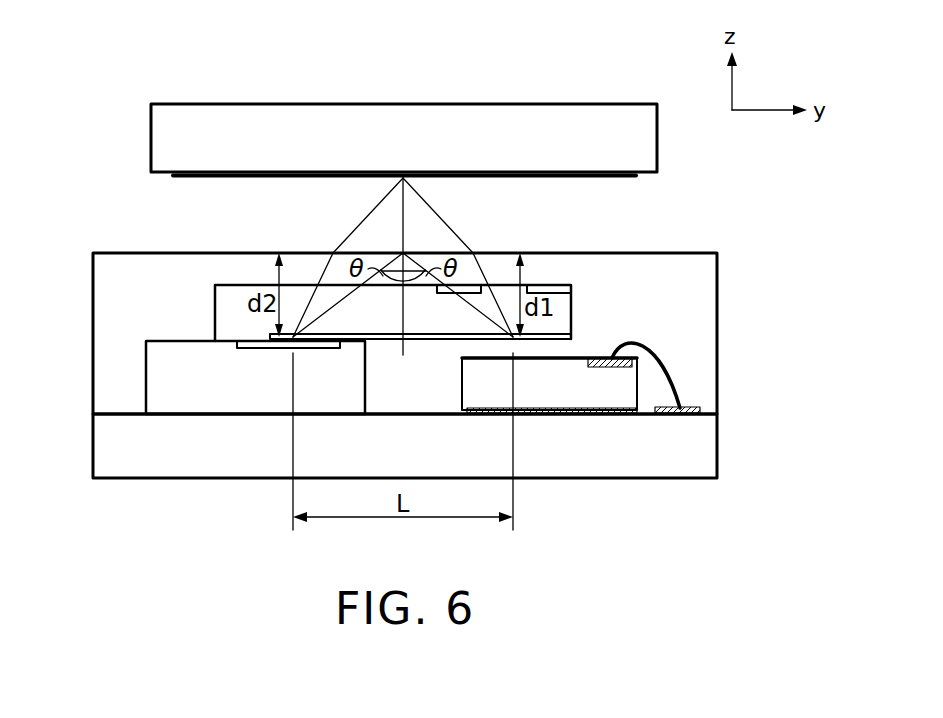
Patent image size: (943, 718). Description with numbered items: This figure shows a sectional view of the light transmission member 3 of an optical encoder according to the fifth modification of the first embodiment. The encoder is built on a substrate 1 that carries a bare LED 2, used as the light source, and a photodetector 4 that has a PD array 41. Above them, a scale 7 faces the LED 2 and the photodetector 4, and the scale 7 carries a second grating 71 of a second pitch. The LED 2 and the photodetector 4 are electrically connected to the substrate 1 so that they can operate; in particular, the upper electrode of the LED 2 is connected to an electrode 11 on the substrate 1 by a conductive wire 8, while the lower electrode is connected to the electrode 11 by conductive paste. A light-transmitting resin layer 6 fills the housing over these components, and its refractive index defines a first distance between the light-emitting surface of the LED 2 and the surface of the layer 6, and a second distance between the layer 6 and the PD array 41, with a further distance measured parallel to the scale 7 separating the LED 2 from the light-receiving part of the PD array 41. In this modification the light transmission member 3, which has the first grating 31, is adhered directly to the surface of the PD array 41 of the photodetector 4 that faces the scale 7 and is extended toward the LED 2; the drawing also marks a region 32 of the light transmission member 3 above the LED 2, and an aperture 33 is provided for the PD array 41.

The substrate 1 is at (162, 463).
The electrode 11 is at (607, 413).
The bare LED 2 is at (637, 357).
The light transmission member 3 is at (572, 302).
The first grating 31 is at (553, 331).
The light receiving window 32 is at (551, 287).
The aperture 33 is at (327, 335).
The photodetector 4 is at (160, 388).
The PD array 41 is at (237, 345).
The light-transmitting resin layer 6 is at (717, 291).
The scale 7 is at (151, 136).
The second grating 71 is at (636, 177).
The conductive wire 8 is at (680, 393).